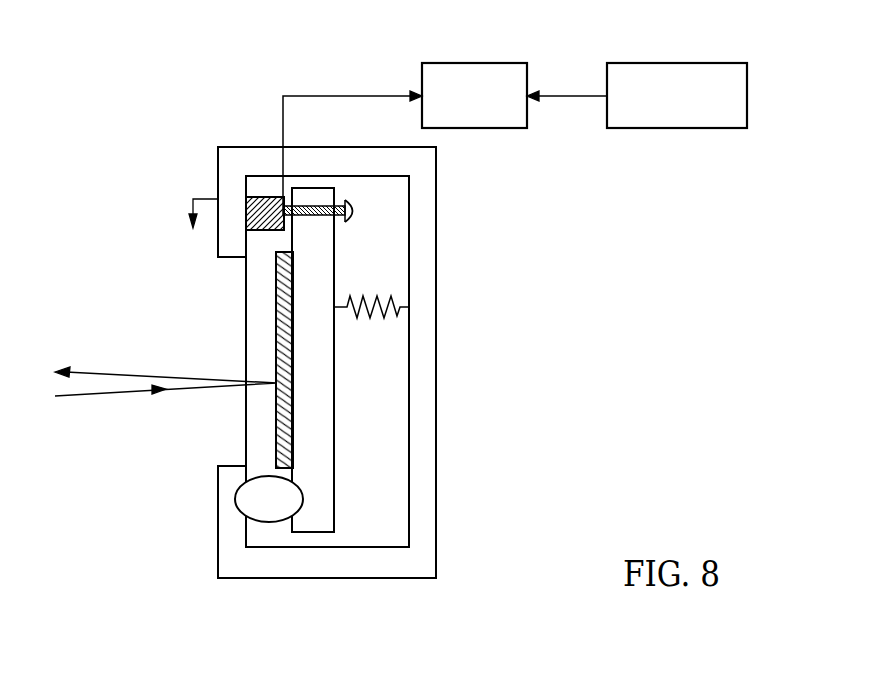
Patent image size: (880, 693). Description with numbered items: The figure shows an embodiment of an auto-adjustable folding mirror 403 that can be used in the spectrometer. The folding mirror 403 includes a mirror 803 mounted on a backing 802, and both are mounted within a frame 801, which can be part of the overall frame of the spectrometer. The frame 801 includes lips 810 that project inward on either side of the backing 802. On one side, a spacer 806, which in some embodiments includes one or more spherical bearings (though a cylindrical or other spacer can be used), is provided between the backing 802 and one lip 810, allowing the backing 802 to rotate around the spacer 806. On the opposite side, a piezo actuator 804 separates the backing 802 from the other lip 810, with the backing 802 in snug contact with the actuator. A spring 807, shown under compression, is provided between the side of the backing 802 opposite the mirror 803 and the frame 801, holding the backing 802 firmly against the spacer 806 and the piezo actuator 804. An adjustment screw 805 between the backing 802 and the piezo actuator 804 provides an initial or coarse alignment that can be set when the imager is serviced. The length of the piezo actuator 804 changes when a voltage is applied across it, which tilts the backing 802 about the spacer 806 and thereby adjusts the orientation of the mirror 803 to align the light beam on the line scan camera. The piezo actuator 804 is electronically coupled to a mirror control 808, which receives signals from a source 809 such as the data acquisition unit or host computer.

The folding mirror 403 is at (466, 374).
The frame 801 is at (365, 564).
The backing 802 is at (328, 423).
The mirror 803 is at (276, 313).
The piezo actuator 804 is at (263, 197).
The adjustment screw 805 is at (349, 199).
The spacer 806 is at (268, 518).
The spring 807 is at (376, 296).
The mirror control 808 is at (470, 63).
The source 809 is at (682, 63).
The lips 810 is at (218, 240).